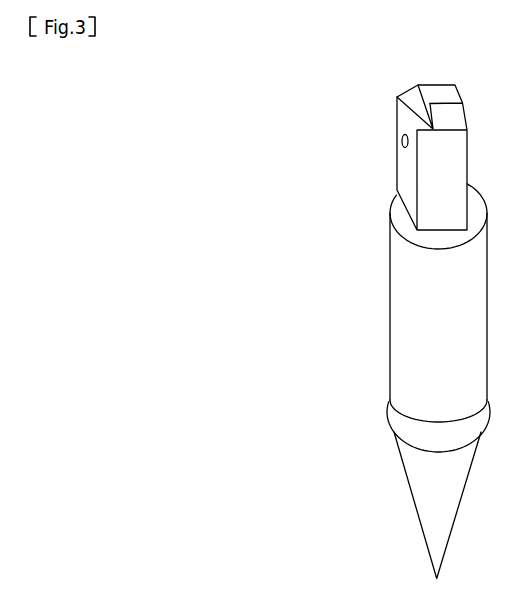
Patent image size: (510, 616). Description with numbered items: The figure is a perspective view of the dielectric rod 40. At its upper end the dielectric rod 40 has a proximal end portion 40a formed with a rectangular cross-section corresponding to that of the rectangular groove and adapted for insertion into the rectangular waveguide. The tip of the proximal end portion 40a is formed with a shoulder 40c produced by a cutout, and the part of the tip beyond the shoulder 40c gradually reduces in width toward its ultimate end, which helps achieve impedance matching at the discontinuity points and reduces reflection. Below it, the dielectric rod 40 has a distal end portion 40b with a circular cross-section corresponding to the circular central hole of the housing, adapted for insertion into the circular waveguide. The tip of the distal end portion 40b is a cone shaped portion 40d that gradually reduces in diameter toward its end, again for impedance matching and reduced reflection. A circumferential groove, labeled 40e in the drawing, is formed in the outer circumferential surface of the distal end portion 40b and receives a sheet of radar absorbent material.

The dielectric rod 40 is at (341, 298).
The proximal end portion 40a is at (412, 166).
The distal end portion 40b is at (435, 388).
The shoulder 40c is at (417, 114).
The cone shaped portion 40d is at (423, 520).
The flange ring 40e is at (400, 432).